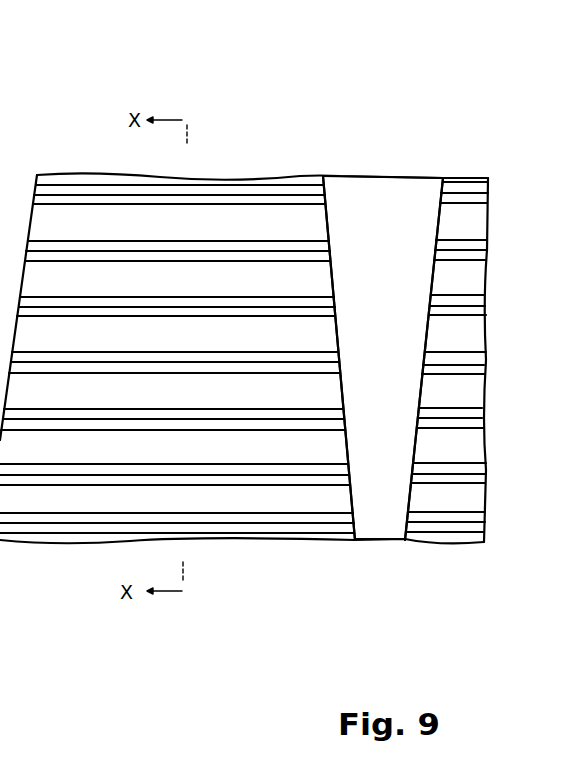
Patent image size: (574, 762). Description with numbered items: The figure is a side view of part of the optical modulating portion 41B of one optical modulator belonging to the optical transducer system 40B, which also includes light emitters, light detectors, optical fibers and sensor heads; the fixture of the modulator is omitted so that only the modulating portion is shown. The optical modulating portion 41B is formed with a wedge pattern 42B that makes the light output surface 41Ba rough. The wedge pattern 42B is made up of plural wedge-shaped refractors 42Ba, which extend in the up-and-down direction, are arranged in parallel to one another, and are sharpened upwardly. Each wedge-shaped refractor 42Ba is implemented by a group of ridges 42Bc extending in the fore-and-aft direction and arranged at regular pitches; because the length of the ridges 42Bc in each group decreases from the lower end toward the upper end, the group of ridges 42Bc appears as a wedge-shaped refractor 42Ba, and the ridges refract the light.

The optical transducer system 40B is at (462, 77).
The optical modulating portion 41B is at (33, 163).
The light output surface 41Ba is at (377, 525).
The wedge pattern 42B is at (477, 107).
The wedge-shaped refractor 42Ba is at (333, 277).
The ridge 42Bc is at (263, 352).